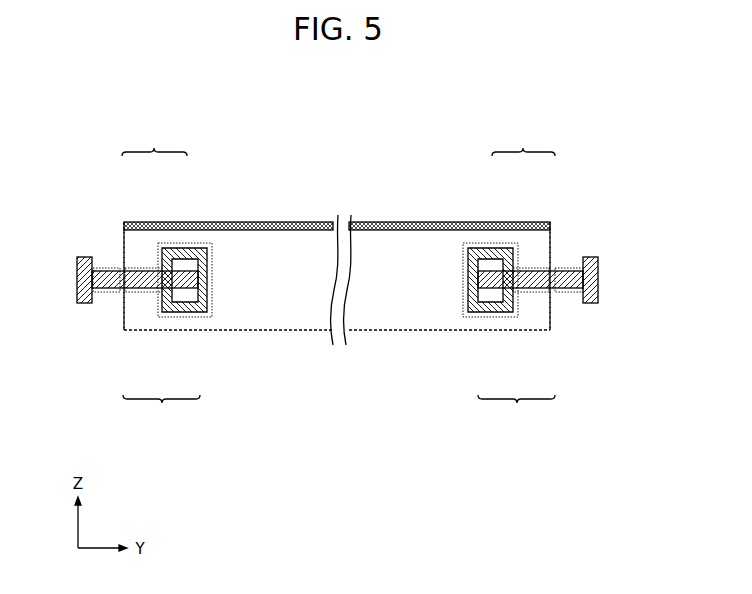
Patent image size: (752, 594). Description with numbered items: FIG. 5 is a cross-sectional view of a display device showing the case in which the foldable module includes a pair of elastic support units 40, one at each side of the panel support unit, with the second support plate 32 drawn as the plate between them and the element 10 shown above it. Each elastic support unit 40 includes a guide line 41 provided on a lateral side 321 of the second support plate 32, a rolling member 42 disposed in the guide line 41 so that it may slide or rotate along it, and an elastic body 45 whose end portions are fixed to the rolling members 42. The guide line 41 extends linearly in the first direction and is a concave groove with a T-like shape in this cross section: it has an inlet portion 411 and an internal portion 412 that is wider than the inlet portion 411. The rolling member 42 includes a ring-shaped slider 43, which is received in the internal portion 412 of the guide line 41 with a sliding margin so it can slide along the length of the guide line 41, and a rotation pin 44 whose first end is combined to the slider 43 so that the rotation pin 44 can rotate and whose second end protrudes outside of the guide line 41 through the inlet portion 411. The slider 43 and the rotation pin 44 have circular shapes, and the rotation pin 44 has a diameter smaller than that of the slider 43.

The plate 10 is at (431, 222).
The second support plate 32 is at (387, 322).
The lateral side of the second support plate 321 is at (123, 236).
The elastic support unit 40 is at (74, 271).
The guide line 41 is at (338, 139).
The inlet portion 411 is at (140, 271).
The internal portion 412 is at (168, 245).
The rolling member 42 is at (339, 412).
The slider 43 is at (190, 312).
The rotation pin 44 is at (135, 292).
The elastic body 45 is at (103, 268).